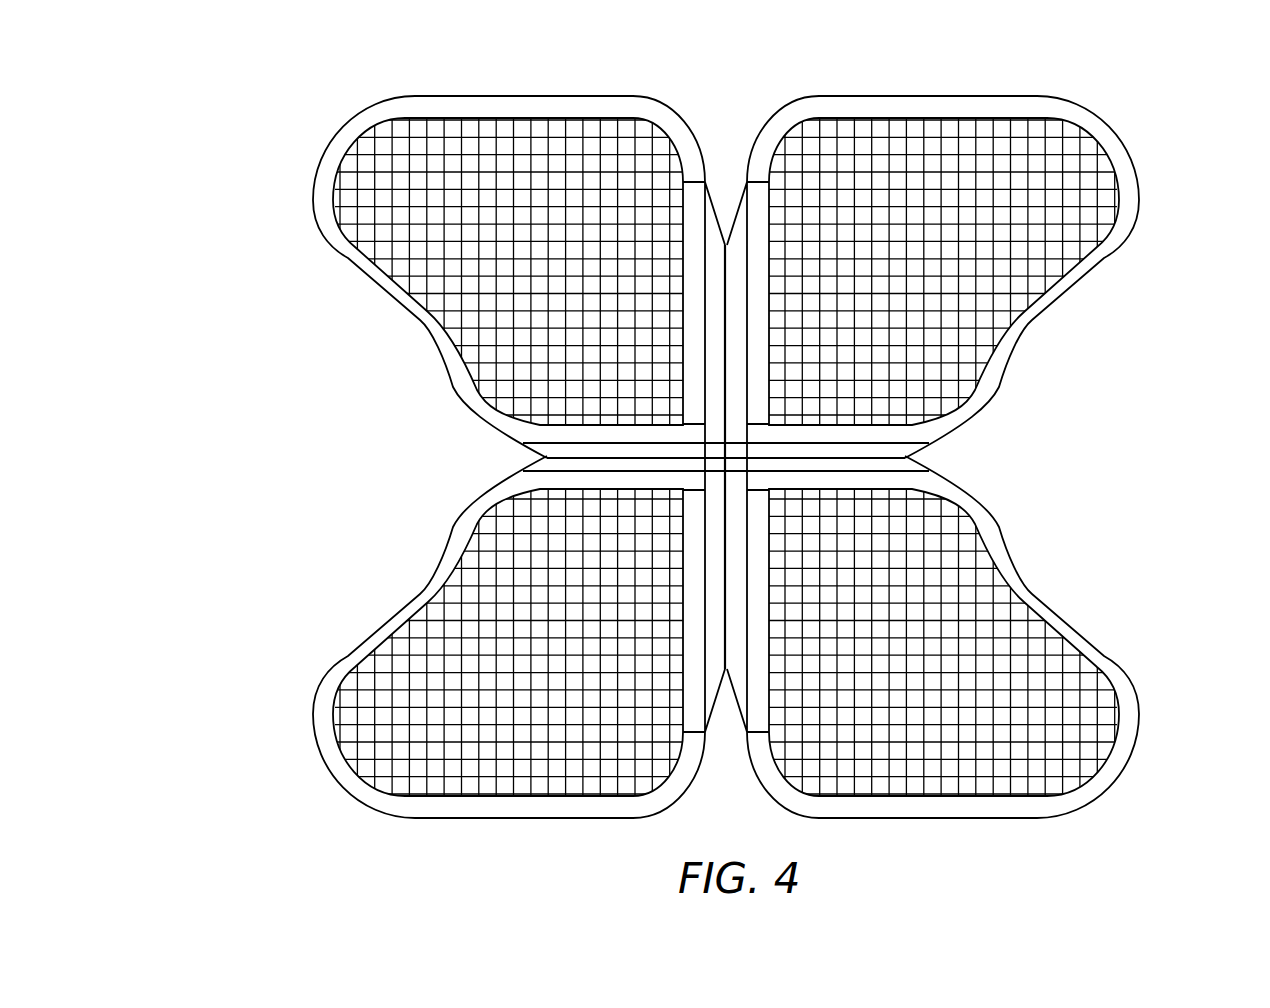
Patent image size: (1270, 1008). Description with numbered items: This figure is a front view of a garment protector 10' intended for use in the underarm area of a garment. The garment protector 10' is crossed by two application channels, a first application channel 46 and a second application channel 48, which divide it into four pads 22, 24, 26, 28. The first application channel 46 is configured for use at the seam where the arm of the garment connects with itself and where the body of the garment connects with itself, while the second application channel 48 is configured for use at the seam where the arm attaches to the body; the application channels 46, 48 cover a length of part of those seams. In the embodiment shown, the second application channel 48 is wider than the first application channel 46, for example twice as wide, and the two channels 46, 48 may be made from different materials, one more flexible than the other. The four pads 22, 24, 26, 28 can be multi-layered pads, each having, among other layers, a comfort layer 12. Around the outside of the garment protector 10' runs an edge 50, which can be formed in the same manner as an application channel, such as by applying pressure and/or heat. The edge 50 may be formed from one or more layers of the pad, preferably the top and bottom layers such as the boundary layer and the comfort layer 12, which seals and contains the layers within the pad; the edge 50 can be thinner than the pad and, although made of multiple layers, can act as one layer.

The garment protector 10' is at (698, 462).
The comfort layer 12 is at (980, 597).
The pad 22 is at (1000, 150).
The pad 24 is at (450, 150).
The pad 26 is at (453, 767).
The pad 28 is at (1000, 767).
The first application channel 46 is at (547, 458).
The second application channel 48 is at (727, 243).
The edge 50 is at (327, 158).